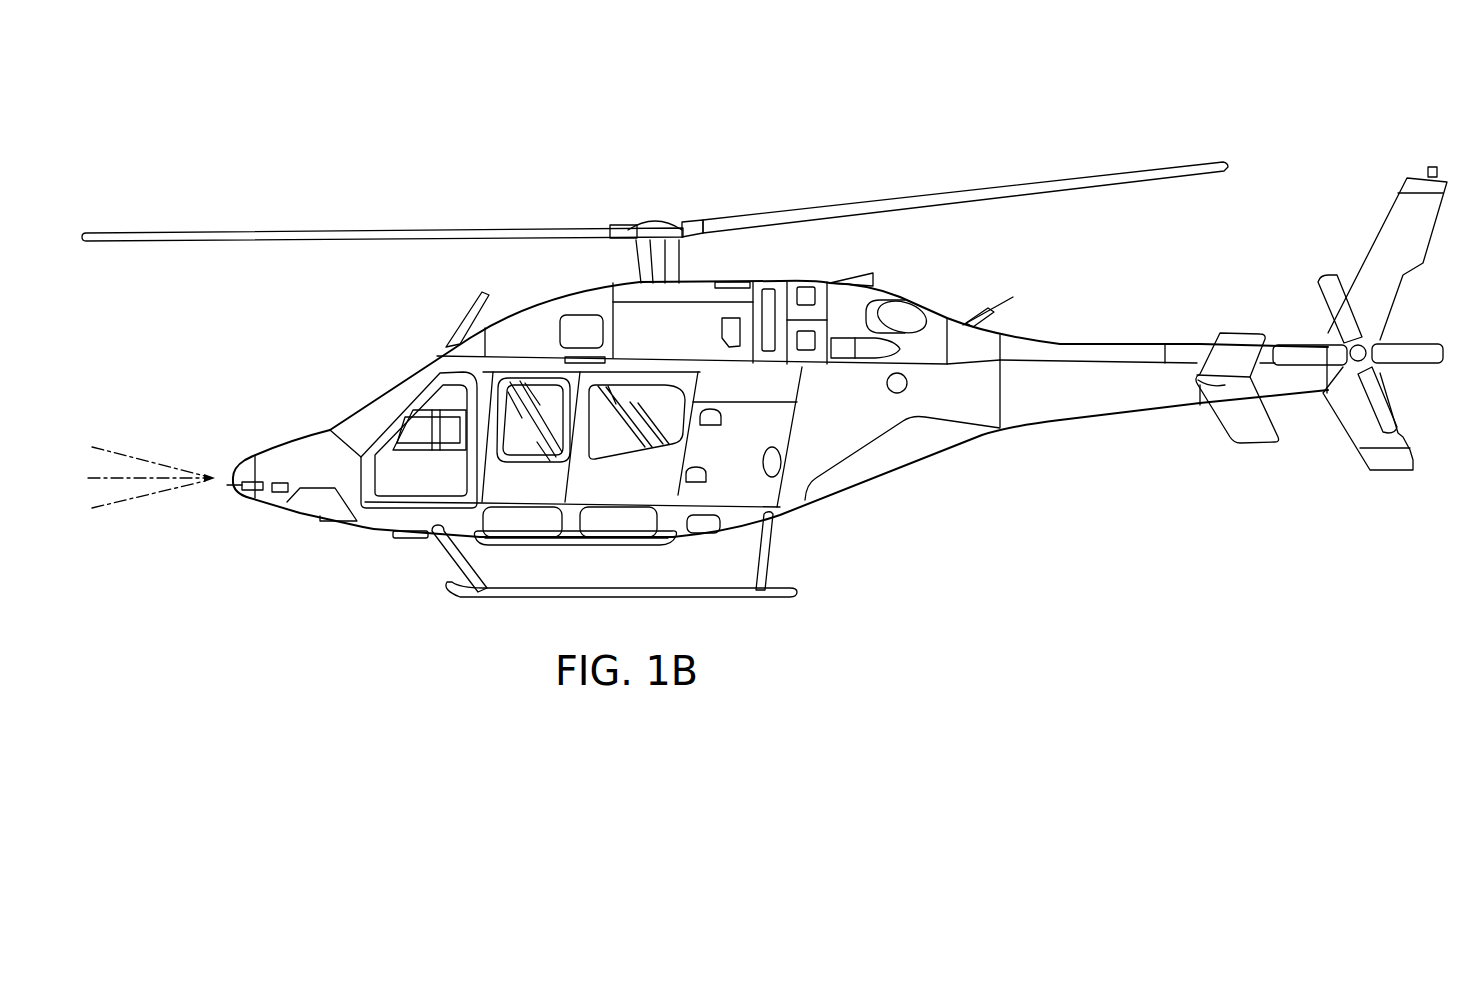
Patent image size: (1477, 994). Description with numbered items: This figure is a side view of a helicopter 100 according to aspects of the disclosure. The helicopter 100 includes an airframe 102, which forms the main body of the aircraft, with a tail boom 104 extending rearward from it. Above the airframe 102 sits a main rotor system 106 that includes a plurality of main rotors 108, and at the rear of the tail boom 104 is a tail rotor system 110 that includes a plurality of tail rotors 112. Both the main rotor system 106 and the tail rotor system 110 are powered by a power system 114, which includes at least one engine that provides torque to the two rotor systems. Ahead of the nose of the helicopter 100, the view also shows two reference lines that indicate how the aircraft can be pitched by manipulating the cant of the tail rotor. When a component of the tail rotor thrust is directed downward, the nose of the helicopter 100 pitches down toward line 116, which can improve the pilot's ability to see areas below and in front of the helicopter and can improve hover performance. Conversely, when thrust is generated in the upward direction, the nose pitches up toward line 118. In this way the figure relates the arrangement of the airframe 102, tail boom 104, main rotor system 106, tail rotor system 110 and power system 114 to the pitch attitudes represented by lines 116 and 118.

The helicopter 100 is at (222, 110).
The airframe 102 is at (852, 493).
The tail boom 104 is at (1140, 413).
The main rotor system 106 is at (674, 196).
The main rotors 108 is at (345, 229).
The tail rotor system 110 is at (1312, 328).
The tail rotors 112 is at (1418, 338).
The power system 114 is at (807, 278).
The line 116 is at (122, 506).
The line 118 is at (122, 452).